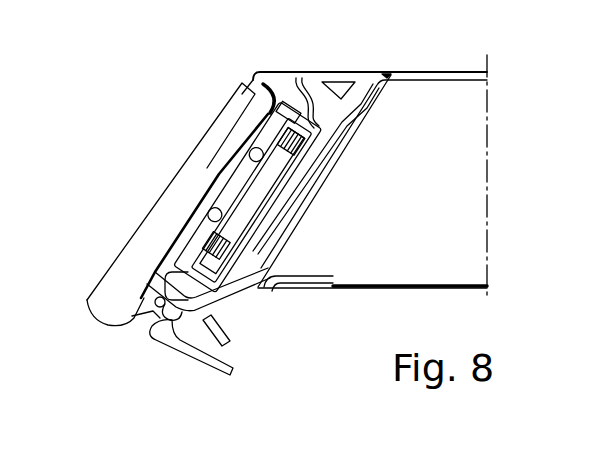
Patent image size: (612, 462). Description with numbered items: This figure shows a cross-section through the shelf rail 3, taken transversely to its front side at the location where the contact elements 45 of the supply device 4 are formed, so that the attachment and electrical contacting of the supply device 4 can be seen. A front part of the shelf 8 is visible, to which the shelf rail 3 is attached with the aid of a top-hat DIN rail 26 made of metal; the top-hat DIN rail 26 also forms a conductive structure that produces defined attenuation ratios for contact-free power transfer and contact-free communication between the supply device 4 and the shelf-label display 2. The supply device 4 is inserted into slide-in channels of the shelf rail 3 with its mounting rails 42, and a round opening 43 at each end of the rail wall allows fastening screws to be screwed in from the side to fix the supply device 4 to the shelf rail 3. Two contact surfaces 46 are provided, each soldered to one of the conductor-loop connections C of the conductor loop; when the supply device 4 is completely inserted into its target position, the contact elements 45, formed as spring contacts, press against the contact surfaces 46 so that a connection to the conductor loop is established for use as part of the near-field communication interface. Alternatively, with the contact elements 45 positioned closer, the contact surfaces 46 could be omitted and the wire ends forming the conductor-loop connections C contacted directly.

The shelf-label display 2 is at (158, 228).
The shelf rail 3 is at (270, 71).
The supply device 4 is at (240, 286).
The shelf 8 is at (477, 147).
The top-hat DIN rail 26 is at (300, 197).
The mounting rails 42 is at (300, 108).
The round opening 43 is at (308, 86).
The contact elements 45 is at (313, 160).
The contact surfaces 46 is at (256, 148).
The conductor-loop connections C is at (190, 187).